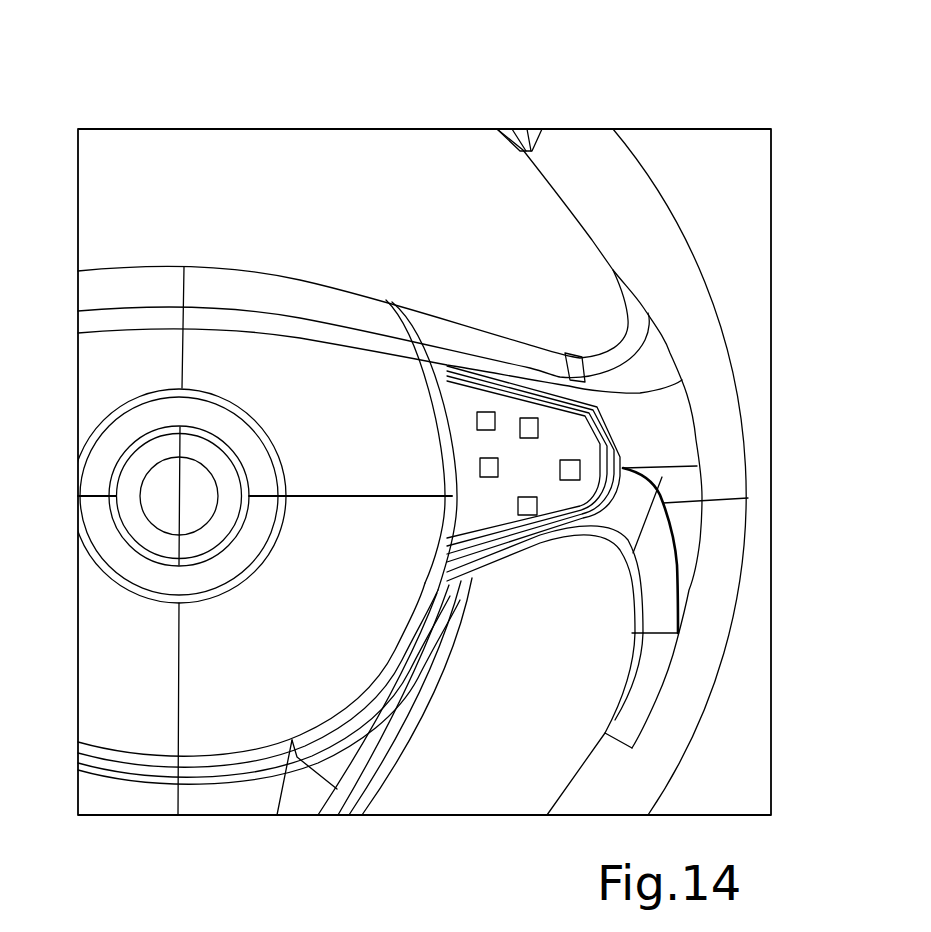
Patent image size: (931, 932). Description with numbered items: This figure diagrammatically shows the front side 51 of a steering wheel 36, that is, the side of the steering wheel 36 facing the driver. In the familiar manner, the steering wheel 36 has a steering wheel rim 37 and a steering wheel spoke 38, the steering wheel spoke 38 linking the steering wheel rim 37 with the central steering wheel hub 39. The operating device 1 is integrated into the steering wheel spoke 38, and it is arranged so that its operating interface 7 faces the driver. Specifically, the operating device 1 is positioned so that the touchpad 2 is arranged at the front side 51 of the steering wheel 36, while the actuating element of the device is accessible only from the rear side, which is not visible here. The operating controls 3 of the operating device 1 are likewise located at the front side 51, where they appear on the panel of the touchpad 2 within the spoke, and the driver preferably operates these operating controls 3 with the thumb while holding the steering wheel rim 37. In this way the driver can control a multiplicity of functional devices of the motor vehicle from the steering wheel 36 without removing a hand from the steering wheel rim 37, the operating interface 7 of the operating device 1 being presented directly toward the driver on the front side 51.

The steering wheel 36 is at (648, 113).
The steering wheel rim 37 is at (692, 289).
The steering wheel spoke 38 is at (458, 320).
The steering wheel hub 39 is at (258, 280).
The operating device 1 is at (562, 418).
The touchpad 2 is at (577, 497).
The operating controls 3 is at (497, 458).
The operating interface 7 is at (490, 507).
The front side 51 is at (495, 748).